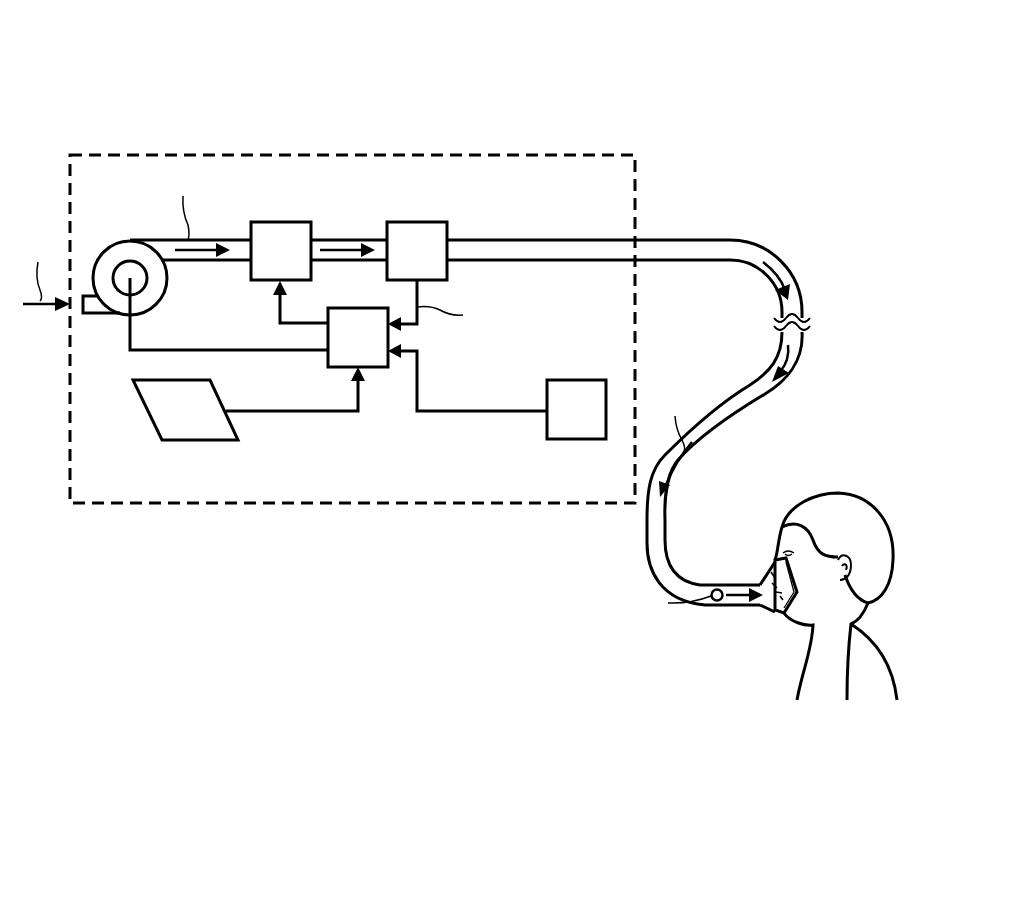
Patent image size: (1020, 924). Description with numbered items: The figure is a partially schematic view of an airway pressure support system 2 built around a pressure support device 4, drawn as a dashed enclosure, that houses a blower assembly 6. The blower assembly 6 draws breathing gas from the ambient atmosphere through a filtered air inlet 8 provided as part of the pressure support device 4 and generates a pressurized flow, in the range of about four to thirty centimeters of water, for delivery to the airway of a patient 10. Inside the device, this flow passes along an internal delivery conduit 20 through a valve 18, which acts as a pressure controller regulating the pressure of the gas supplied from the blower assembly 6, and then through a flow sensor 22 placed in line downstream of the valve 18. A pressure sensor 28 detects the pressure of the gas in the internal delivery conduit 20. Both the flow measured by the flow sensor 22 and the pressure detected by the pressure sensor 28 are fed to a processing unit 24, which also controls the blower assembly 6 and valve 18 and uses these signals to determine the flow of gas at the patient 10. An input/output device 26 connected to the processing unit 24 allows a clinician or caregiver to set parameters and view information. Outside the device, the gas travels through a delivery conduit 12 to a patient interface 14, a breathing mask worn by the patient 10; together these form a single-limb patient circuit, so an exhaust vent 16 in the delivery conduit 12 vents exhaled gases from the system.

The airway pressure support system 2 is at (117, 92).
The pressure support device 4 is at (593, 155).
The blower assembly 6 is at (112, 252).
The filtered air inlet 8 is at (62, 322).
The patient 10 is at (850, 494).
The delivery conduit 12 is at (792, 372).
The patient interface 14 is at (779, 617).
The exhaust vent 16 is at (717, 601).
The valve 18 is at (266, 266).
The internal delivery conduit 20 is at (490, 240).
The flow sensor 22 is at (402, 266).
The processing unit 24 is at (343, 352).
The input/output device 26 is at (171, 426).
The pressure sensor 28 is at (562, 425).